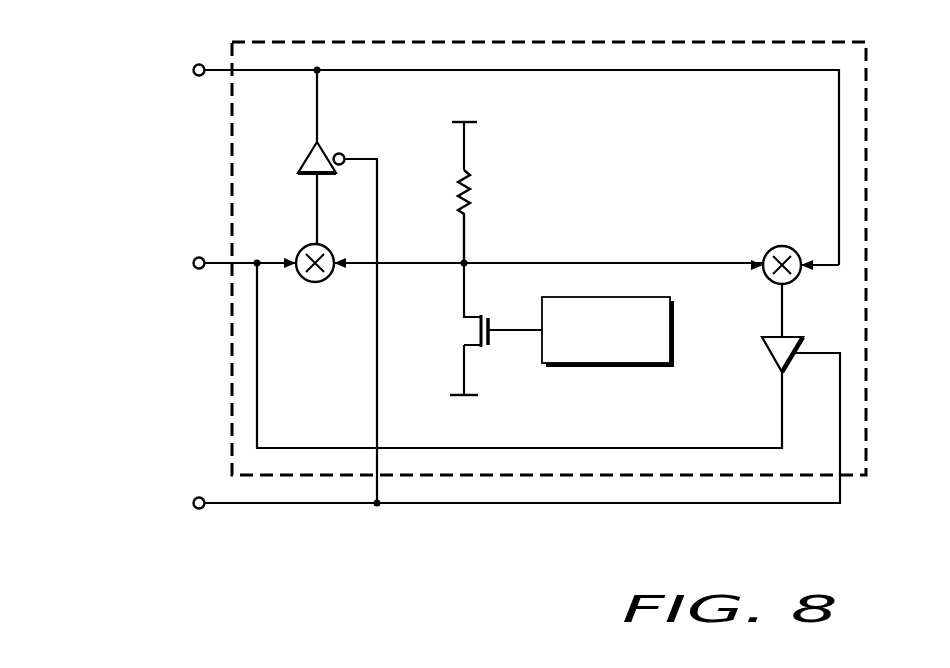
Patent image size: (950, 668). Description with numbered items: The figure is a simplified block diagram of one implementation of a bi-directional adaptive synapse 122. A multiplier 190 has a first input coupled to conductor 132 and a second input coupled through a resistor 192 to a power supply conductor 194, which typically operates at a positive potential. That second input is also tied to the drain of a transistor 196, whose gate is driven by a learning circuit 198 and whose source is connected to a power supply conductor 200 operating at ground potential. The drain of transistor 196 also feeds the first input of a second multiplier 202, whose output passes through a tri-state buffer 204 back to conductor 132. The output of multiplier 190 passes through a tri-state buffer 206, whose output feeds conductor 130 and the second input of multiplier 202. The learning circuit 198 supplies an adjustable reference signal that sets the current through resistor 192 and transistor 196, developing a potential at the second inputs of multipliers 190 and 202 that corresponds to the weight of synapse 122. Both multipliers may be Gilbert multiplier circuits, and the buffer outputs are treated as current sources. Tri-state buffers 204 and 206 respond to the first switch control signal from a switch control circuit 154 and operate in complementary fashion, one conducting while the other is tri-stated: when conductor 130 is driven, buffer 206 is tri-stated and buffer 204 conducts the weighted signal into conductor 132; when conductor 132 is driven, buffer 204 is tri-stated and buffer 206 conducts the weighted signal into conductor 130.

The synapse 122 is at (798, 41).
The conductor 130 is at (193, 67).
The conductor 132 is at (193, 261).
The switch control circuit 154 is at (124, 528).
The multiplier 190 is at (309, 283).
The resistor 192 is at (476, 187).
The power supply conductor 194 is at (472, 119).
The transistor 196 is at (462, 330).
The learning circuit 198 is at (634, 369).
The power supply conductor 200 is at (455, 399).
The multiplier 202 is at (779, 246).
The tri-state buffer 204 is at (771, 361).
The tri-state buffer 206 is at (306, 158).